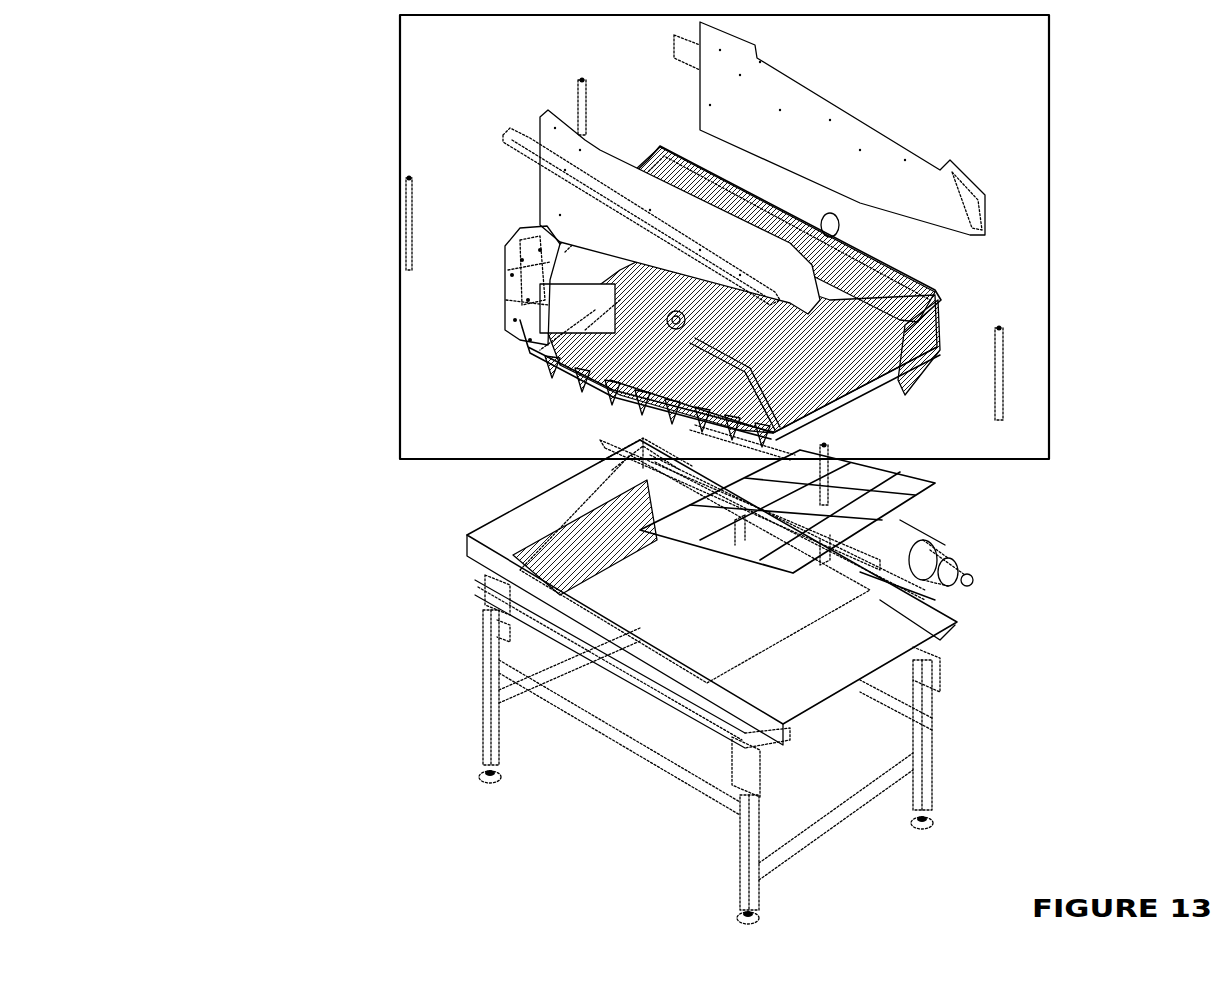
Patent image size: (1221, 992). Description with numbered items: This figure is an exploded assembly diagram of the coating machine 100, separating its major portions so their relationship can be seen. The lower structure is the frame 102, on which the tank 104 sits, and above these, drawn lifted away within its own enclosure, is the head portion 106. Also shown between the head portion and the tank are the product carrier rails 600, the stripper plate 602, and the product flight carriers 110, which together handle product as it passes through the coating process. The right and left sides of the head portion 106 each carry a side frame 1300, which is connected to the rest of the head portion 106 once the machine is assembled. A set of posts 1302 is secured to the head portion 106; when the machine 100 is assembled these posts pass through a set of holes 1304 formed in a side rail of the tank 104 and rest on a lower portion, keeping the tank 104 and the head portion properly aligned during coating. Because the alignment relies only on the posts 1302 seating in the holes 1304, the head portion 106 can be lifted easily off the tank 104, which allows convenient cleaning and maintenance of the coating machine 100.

The coating machine 100 is at (260, 173).
The frame 102 is at (942, 682).
The tank 104 is at (475, 538).
The head portion 106 is at (984, 89).
The product flight carriers 110 is at (940, 410).
The product carrier rails 600 is at (510, 275).
The stripper plate 602 is at (937, 485).
The side frame 1300 is at (590, 135).
The posts 1302 is at (410, 200).
The holes 1304 is at (705, 685).